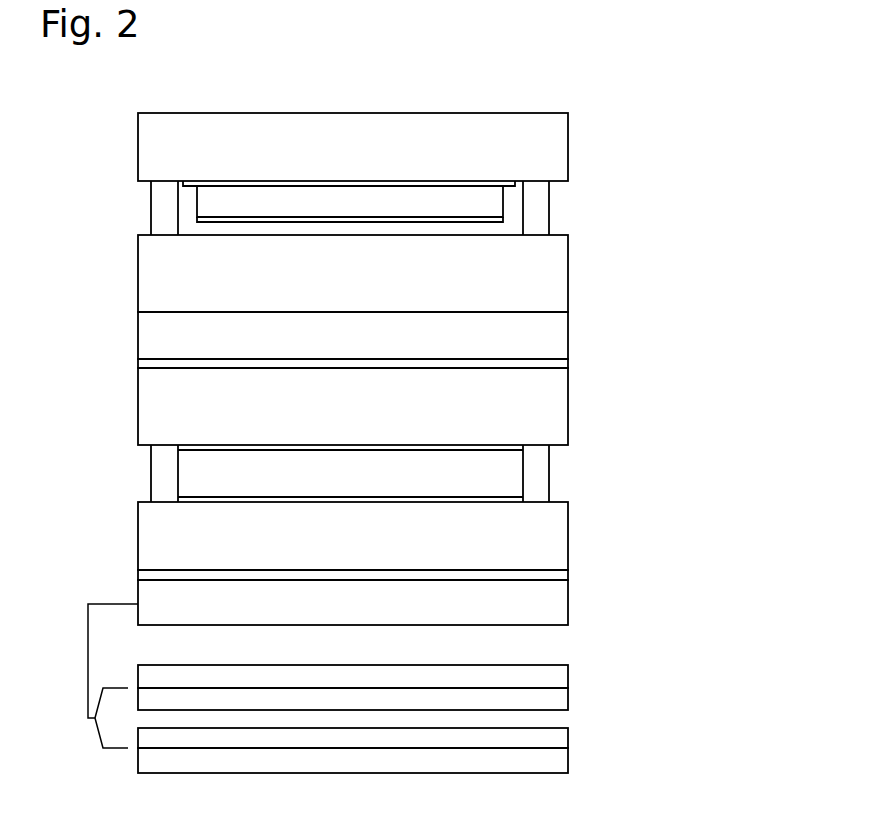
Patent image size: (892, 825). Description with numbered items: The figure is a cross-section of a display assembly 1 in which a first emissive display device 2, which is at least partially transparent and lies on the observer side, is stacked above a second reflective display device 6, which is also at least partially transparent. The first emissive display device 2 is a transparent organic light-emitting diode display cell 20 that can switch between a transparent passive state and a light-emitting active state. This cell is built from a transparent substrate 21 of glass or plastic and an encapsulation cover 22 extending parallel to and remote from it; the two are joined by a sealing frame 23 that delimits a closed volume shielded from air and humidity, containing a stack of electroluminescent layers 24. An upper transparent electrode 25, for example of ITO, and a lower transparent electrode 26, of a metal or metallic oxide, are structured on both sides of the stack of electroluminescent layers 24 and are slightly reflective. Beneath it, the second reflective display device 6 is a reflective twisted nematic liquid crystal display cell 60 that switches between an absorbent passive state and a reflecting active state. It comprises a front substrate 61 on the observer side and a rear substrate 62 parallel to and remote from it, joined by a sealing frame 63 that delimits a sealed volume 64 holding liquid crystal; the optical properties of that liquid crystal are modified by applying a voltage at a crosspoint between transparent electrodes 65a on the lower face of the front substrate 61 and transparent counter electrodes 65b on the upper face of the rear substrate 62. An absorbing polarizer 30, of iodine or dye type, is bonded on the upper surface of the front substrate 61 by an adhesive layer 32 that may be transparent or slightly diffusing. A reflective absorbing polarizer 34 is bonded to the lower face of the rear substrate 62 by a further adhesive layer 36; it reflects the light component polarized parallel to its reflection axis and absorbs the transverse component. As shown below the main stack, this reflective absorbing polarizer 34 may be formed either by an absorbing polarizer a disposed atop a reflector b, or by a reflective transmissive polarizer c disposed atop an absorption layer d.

The display assembly 1 is at (772, 190).
The first emissive display device 2 is at (138, 311).
The transparent organic light-emitting diode display cell 20 is at (633, 203).
The transparent substrate 21 is at (553, 144).
The encapsulation cover 22 is at (540, 273).
The sealing frame 23 is at (533, 218).
The stack of electroluminescent layers 24 is at (487, 203).
The upper transparent electrode 25 is at (490, 182).
The lower transparent electrode 26 is at (468, 220).
The absorbing polarizer 30 is at (552, 333).
The adhesive layer 32 is at (543, 363).
The reflective absorbing polarizer 34 is at (556, 612).
The adhesive layer 36 is at (556, 576).
The second reflective display device 6 is at (138, 580).
The reflective twisted nematic liquid crystal display cell 60 is at (636, 468).
The front substrate 61 is at (548, 389).
The rear substrate 62 is at (556, 543).
The sealing frame 63 is at (537, 458).
The sealed volume 64 is at (495, 467).
The transparent electrodes 65a is at (468, 448).
The transparent counter electrodes 65b is at (480, 500).
The absorbing polarizer a is at (565, 680).
The reflector b is at (560, 699).
The reflective transmissive polarizer c is at (565, 742).
The absorption layer d is at (562, 762).